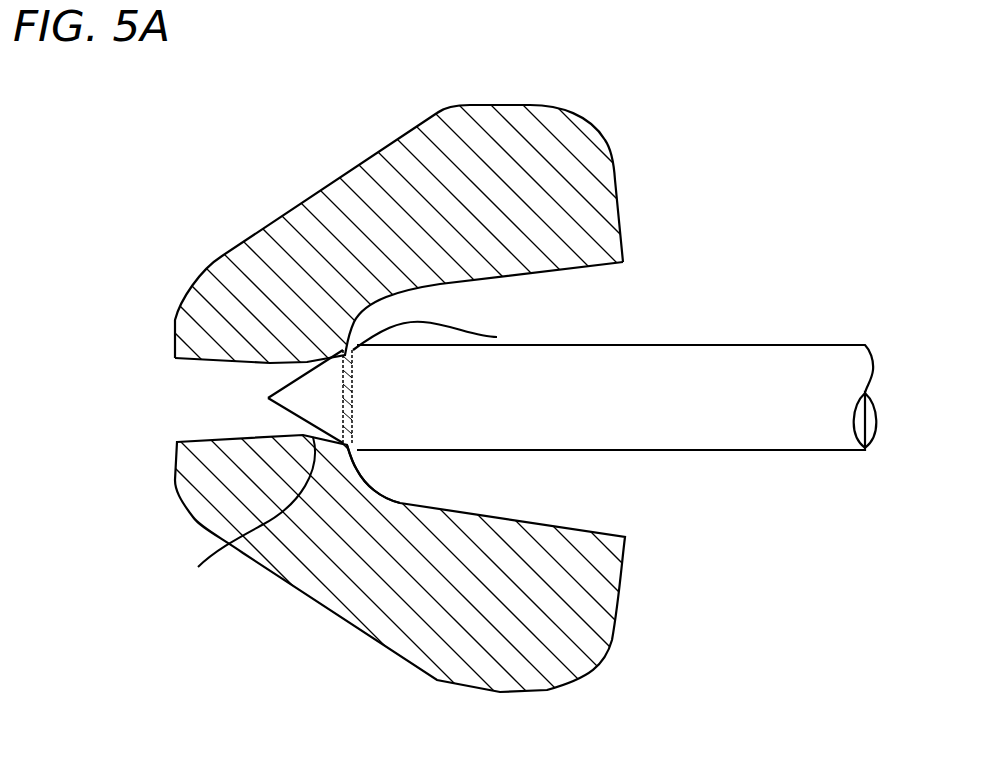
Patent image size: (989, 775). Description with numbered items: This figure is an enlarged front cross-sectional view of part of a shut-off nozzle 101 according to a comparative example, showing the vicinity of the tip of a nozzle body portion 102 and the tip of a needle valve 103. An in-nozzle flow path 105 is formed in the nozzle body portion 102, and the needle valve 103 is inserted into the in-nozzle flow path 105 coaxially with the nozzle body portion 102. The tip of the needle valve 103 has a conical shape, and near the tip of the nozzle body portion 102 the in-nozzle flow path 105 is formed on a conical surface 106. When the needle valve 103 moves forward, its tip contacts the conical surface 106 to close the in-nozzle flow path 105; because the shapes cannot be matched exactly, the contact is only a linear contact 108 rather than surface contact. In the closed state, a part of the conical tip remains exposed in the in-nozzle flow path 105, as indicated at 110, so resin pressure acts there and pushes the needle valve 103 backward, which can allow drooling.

The shut-off nozzle 101 is at (220, 145).
The nozzle body portion 102 is at (202, 242).
The needle valve 103 is at (790, 343).
The in-nozzle flow path 105 is at (607, 495).
The conical surface 106 is at (247, 516).
The linear contact 108 is at (497, 337).
The exposed part of conical portion 110 is at (357, 457).